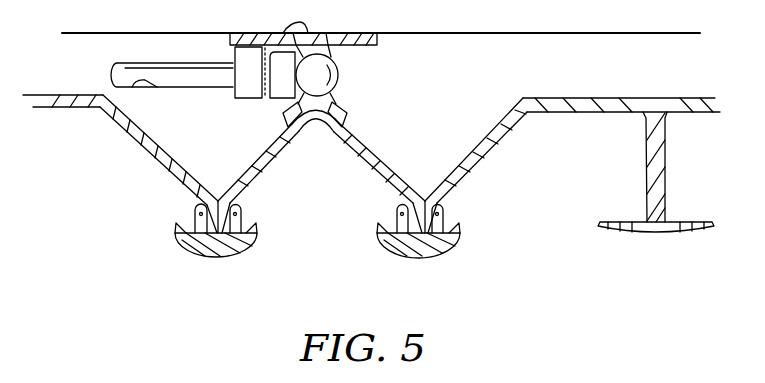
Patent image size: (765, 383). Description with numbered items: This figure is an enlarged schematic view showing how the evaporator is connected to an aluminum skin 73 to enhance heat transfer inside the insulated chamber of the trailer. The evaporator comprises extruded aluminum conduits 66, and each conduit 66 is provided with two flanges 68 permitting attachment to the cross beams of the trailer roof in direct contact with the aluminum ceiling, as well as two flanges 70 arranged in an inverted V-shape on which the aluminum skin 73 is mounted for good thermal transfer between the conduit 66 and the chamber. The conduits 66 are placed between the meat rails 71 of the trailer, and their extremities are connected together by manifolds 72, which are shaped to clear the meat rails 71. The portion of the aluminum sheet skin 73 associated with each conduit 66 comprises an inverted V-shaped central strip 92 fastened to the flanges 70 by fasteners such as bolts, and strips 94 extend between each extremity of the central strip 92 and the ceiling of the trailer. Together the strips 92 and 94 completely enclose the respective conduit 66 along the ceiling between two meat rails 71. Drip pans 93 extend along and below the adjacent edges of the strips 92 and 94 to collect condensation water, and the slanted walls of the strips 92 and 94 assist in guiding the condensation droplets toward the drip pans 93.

The extruded aluminum conduit 66 is at (339, 66).
The flange 68 is at (289, 33).
The flange 70 is at (283, 114).
The meat rail 71 is at (657, 233).
The manifold 72 is at (172, 85).
The aluminum skin 73 is at (560, 93).
The central strip 92 is at (315, 123).
The drip pan 93 is at (233, 247).
The strip 94 is at (160, 152).